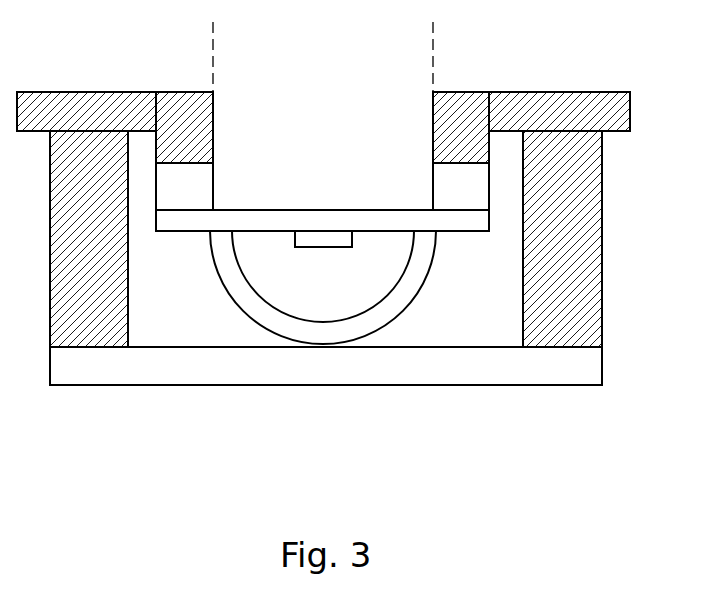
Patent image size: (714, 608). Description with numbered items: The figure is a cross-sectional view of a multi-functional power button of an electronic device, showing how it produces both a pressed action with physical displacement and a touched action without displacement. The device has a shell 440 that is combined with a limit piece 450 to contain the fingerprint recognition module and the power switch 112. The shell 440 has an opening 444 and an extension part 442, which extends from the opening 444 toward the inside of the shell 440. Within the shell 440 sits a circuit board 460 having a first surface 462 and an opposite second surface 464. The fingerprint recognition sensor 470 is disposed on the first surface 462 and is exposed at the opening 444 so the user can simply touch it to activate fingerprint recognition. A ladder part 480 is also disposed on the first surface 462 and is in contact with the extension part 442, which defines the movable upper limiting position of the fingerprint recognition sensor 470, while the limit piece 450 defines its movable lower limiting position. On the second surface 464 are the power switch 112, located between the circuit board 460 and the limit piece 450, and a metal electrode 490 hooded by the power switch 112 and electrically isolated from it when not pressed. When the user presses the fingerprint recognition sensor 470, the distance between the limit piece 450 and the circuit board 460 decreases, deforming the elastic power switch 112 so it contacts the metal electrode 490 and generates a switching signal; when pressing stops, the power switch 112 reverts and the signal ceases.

The power switch 112 is at (417, 297).
The shell 440 is at (602, 237).
The extension part 442 is at (462, 127).
The opening 444 is at (433, 52).
The limit piece 450 is at (332, 385).
The circuit board 460 is at (157, 233).
The first surface 462 is at (270, 210).
The second surface 464 is at (270, 233).
The fingerprint recognition sensor 470 is at (343, 165).
The ladder part 480 is at (462, 188).
The metal electrode 490 is at (323, 247).